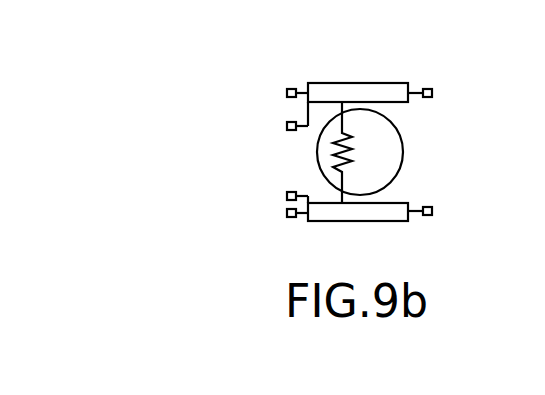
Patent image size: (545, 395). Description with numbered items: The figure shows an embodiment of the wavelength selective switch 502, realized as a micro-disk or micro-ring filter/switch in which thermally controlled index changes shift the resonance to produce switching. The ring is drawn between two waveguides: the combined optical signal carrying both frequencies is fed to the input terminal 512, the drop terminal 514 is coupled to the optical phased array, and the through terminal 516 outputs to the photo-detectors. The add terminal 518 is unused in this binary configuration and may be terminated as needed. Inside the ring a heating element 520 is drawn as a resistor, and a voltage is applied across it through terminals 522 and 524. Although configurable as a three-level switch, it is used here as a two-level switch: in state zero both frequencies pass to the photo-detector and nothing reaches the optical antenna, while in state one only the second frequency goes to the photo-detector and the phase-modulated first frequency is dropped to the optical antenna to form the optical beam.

The wavelength selective switch 502 is at (145, 73).
The input terminal 512 is at (287, 213).
The drop terminal 514 is at (287, 93).
The through terminal 516 is at (432, 211).
The add terminal 518 is at (432, 93).
The heating element 520 is at (346, 155).
The terminal 522 is at (287, 126).
The terminal 524 is at (287, 196).